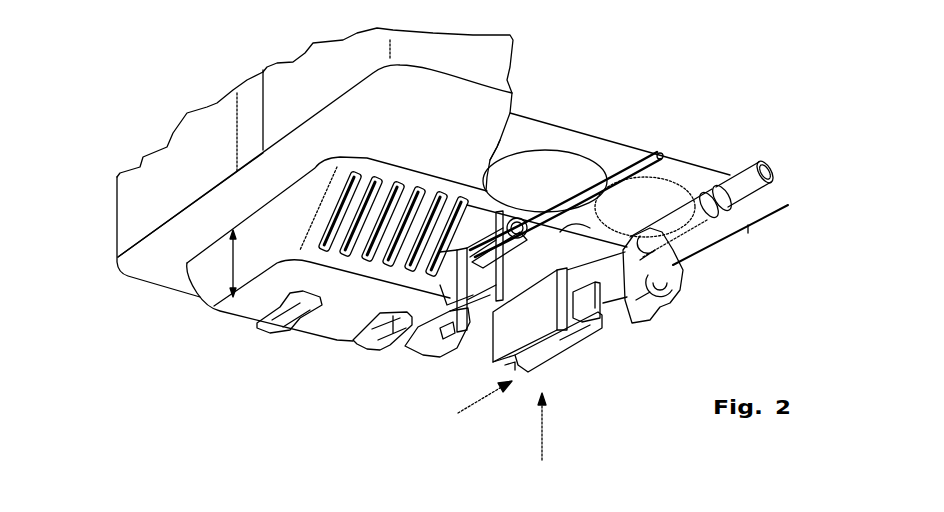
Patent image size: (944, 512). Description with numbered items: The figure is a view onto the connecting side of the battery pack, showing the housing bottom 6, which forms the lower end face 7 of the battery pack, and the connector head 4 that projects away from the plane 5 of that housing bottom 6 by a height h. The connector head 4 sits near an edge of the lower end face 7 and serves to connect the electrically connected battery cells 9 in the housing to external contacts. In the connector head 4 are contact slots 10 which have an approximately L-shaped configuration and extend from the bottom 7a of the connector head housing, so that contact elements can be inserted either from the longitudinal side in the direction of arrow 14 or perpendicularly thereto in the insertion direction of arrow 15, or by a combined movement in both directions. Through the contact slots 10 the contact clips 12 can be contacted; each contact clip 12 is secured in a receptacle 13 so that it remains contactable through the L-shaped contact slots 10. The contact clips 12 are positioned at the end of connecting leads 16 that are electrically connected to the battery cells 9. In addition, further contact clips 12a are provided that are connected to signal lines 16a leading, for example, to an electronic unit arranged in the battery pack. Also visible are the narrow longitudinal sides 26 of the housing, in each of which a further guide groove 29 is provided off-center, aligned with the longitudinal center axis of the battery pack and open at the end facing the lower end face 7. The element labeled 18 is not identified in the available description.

The connector head 4 is at (240, 320).
The plane 5 is at (503, 143).
The housing bottom 6 is at (400, 98).
The lower end face 7 is at (132, 274).
The bottom 7a is at (333, 320).
The battery cells 9 is at (575, 163).
The contact slots 10 is at (292, 328).
The contact clips 12 is at (688, 308).
The contact clips 12a is at (440, 357).
The receptacle 13 is at (568, 352).
The arrow 14 is at (473, 403).
The arrow 15 is at (542, 427).
The connecting leads 16 is at (777, 171).
The signal lines 16a is at (633, 187).
The housing edge 18 is at (173, 290).
The narrow longitudinal sides 26 is at (178, 145).
The further guide groove 29 is at (248, 93).